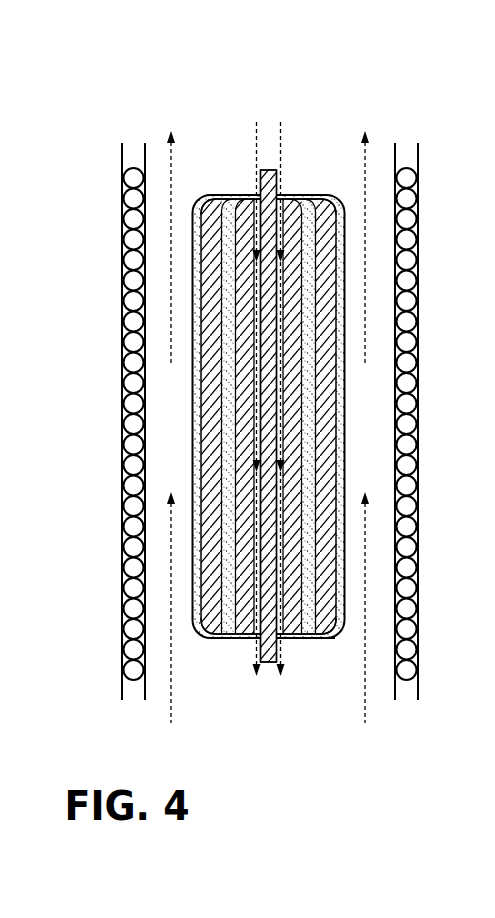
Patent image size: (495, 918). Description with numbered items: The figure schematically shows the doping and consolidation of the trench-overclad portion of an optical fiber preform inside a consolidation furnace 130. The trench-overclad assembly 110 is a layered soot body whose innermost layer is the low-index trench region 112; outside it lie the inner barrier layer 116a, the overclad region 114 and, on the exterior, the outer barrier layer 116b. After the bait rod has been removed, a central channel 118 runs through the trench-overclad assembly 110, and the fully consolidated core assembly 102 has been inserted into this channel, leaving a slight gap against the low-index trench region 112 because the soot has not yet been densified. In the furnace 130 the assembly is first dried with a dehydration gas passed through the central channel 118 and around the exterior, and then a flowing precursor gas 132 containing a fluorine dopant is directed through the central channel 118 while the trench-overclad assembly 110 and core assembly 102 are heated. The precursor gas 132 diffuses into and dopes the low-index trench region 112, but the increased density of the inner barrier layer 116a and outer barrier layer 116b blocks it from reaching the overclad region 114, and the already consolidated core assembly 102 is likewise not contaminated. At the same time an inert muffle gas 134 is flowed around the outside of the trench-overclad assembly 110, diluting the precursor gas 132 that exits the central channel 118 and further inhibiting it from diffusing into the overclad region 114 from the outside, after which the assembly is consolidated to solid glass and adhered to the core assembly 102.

The consolidated core assembly 102 is at (265, 170).
The trench-overclad assembly 110 is at (328, 176).
The low-index trench region 112 is at (243, 195).
The overclad region 114 is at (210, 618).
The inner barrier layer 116a is at (305, 637).
The outer barrier layer 116b is at (193, 402).
The central channel 118 is at (257, 483).
The consolidation furnace 130 is at (421, 171).
The precursor gas 132 is at (254, 133).
The muffle gas 134 is at (168, 140).